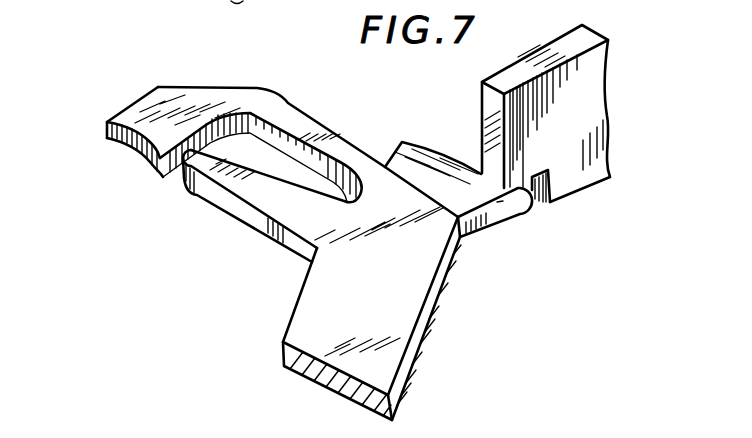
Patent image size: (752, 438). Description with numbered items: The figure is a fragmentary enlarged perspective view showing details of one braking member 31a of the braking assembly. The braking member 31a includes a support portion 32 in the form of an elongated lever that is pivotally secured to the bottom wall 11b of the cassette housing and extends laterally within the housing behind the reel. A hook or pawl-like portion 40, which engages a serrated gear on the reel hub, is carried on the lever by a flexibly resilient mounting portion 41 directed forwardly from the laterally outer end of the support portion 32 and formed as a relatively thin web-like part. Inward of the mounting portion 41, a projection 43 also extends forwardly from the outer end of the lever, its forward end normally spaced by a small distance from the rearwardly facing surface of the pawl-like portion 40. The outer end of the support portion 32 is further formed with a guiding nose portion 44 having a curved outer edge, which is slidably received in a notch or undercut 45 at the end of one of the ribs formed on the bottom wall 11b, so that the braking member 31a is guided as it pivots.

The bottom wall 11b is at (548, 72).
The braking member 31a is at (417, 381).
The support portion 32 is at (300, 318).
The pawl-like portion 40 is at (107, 136).
The flexibly resilient mounting portion 41 is at (290, 118).
The projection 43 is at (242, 180).
The guiding nose portion 44 is at (477, 216).
The notch 45 is at (535, 198).